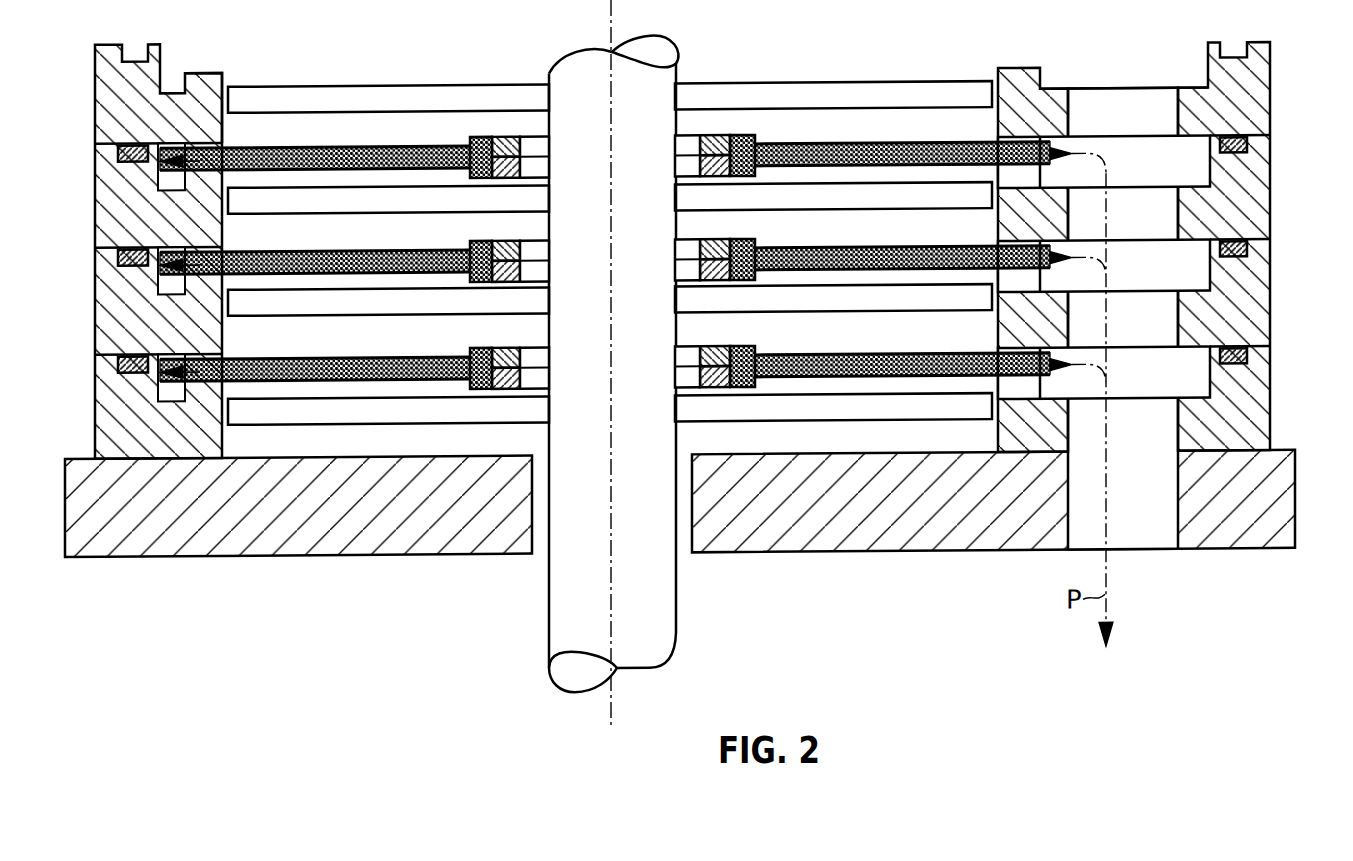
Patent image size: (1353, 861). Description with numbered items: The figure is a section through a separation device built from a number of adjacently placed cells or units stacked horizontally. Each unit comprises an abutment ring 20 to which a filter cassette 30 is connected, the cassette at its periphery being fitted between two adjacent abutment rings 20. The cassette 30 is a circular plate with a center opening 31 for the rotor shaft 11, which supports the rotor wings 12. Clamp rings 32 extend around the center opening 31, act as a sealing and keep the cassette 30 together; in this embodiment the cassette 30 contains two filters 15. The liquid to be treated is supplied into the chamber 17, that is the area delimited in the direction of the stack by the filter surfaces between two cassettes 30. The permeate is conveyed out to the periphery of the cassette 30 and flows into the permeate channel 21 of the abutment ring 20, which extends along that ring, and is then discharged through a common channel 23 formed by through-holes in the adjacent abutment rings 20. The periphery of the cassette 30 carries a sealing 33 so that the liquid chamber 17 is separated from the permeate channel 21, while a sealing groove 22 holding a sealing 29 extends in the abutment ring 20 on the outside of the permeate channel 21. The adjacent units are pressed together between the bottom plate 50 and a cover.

The rotor shaft 11 is at (568, 601).
The rotor wings 12 is at (294, 405).
The filters 15 is at (887, 397).
The chamber 17 is at (393, 388).
The abutment ring 20 is at (118, 313).
The permeate channel 21 is at (168, 372).
The sealing groove 22 is at (168, 386).
The common channel 23 is at (1128, 500).
The sealing 29 is at (127, 353).
The filter cassette 30 is at (420, 378).
The center opening 31 is at (535, 379).
The clamp rings 32 is at (505, 395).
The sealing 33 is at (207, 346).
The bottom plate 50 is at (206, 542).